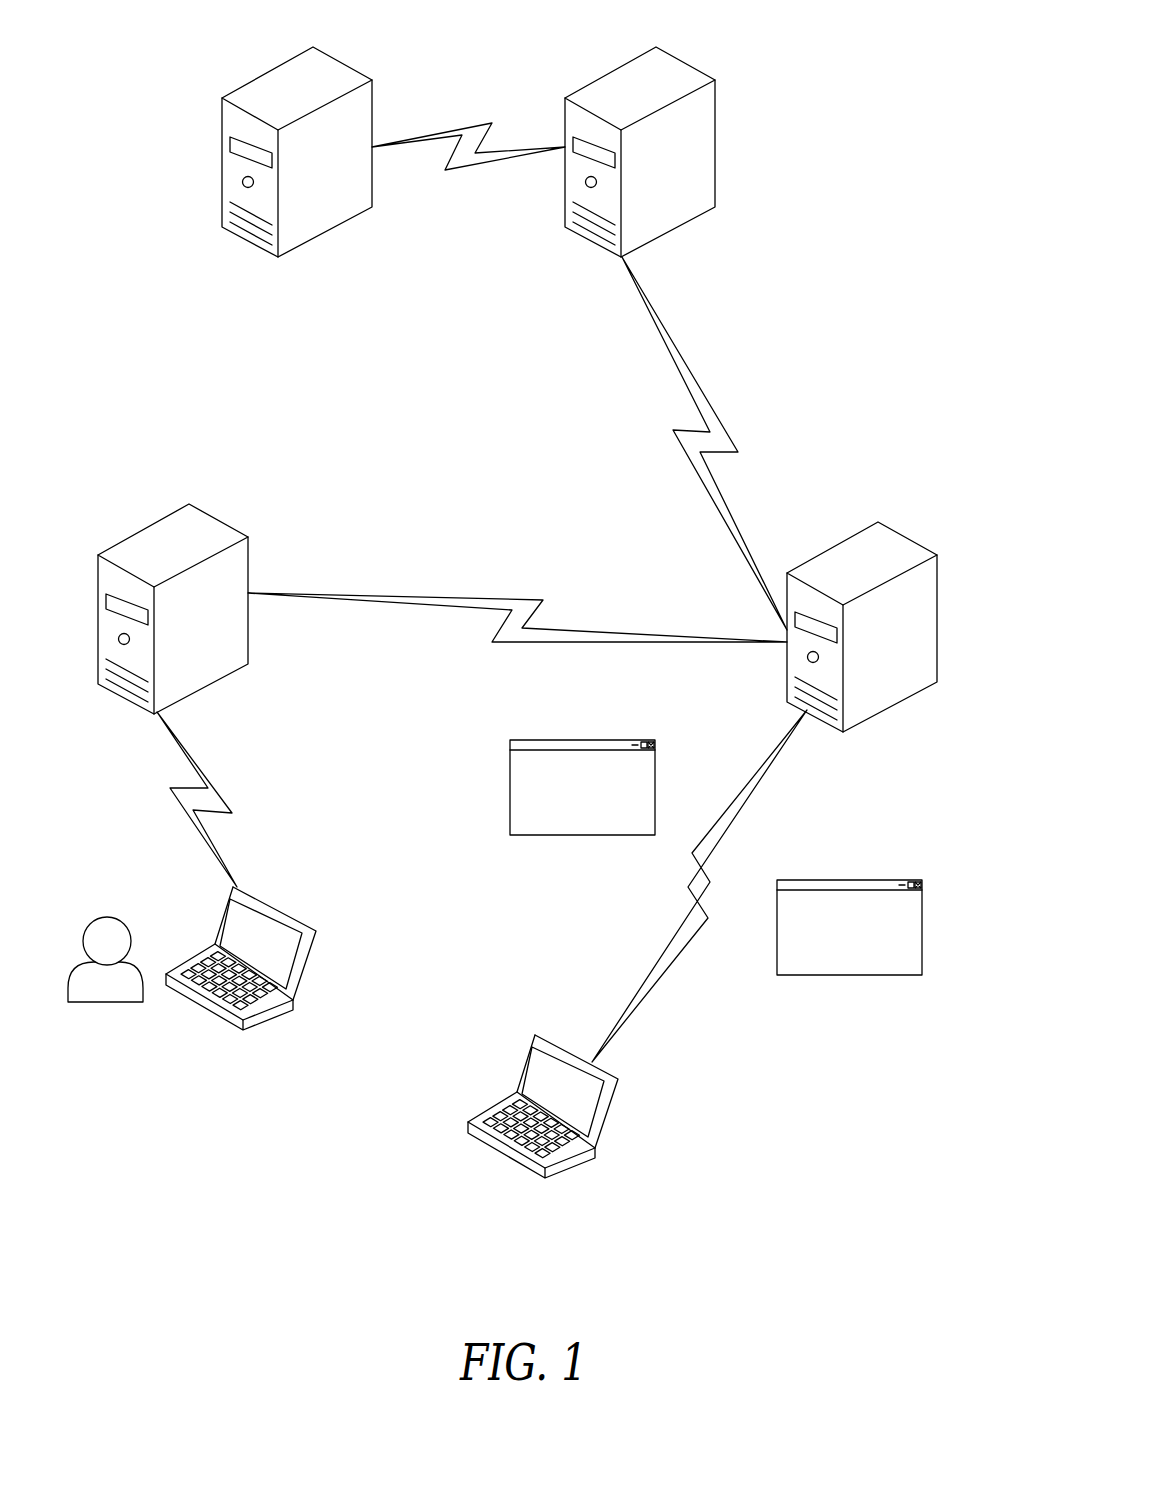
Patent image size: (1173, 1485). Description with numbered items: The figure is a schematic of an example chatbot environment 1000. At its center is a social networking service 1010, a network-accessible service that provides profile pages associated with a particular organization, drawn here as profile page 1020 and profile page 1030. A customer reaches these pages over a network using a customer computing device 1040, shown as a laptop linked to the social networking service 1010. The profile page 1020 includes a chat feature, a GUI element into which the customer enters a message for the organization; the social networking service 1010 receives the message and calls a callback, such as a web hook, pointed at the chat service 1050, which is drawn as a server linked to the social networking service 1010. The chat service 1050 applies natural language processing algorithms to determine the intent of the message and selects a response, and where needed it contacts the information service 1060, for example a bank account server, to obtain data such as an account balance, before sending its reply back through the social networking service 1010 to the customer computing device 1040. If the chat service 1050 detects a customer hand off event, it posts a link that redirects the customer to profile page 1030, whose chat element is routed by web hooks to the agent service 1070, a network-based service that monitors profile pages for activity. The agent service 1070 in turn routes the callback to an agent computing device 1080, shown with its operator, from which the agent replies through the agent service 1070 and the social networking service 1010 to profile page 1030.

The chatbot environment 1000 is at (846, 58).
The social networking service 1010 is at (842, 731).
The profile page 1020 is at (510, 756).
The profile page 1030 is at (842, 880).
The customer computing device 1040 is at (530, 1068).
The chat service 1050 is at (693, 60).
The information service 1060 is at (337, 60).
The agent service 1070 is at (190, 503).
The agent computing device 1080 is at (250, 880).